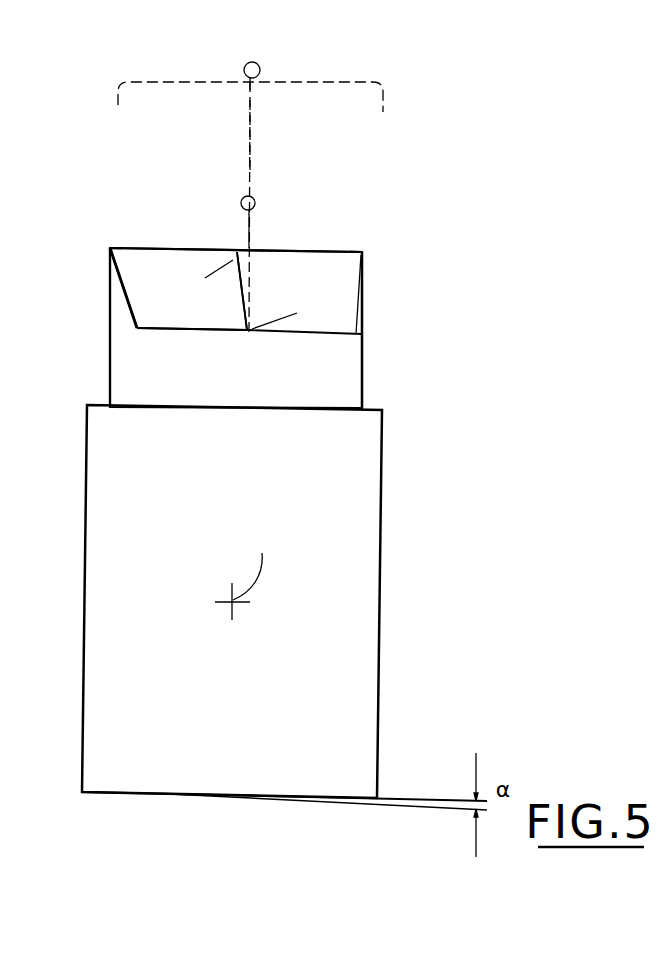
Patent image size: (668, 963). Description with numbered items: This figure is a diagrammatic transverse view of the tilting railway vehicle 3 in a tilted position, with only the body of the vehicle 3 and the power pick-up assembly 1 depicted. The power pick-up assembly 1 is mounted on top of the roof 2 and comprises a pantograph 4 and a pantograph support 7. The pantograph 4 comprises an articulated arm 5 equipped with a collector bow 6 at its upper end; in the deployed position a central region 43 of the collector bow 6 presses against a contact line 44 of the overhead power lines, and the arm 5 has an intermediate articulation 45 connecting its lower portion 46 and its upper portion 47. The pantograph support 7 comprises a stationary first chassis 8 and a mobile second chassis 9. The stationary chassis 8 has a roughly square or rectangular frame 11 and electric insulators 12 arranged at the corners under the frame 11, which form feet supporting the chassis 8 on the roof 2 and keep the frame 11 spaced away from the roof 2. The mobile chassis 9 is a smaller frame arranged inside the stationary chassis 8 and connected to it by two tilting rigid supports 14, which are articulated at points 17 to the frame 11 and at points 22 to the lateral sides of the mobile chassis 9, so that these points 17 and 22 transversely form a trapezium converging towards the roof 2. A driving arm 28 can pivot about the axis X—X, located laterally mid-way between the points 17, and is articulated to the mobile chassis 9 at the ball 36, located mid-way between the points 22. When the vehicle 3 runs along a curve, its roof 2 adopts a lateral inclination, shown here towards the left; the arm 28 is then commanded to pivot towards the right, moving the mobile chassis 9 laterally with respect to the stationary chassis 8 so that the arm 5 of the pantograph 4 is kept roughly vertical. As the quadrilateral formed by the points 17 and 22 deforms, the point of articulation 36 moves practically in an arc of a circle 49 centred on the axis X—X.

The power pick-up assembly 1 is at (397, 178).
The roof 2 is at (97, 405).
The tilting railway vehicle 3 is at (436, 496).
The pantograph 4 is at (275, 234).
The articulated arm 5 is at (282, 157).
The collector bow 6 is at (316, 76).
The pantograph support 7 is at (430, 266).
The stationary first chassis 8 is at (116, 233).
The mobile second chassis 9 is at (159, 339).
The frame 11 is at (337, 250).
The electric insulators 12 is at (110, 300).
The tilting rigid supports 14 is at (131, 268).
The points of articulation 17 is at (110, 248).
The points of articulation 22 is at (137, 330).
The driving arm 28 is at (238, 274).
The ball 36 is at (248, 333).
The central region 43 is at (248, 84).
The contact line 44 is at (241, 75).
The intermediate articulation 45 is at (246, 199).
The lower portion 46 is at (248, 229).
The upper portion 47 is at (247, 135).
The arc of a circle 49 is at (270, 328).